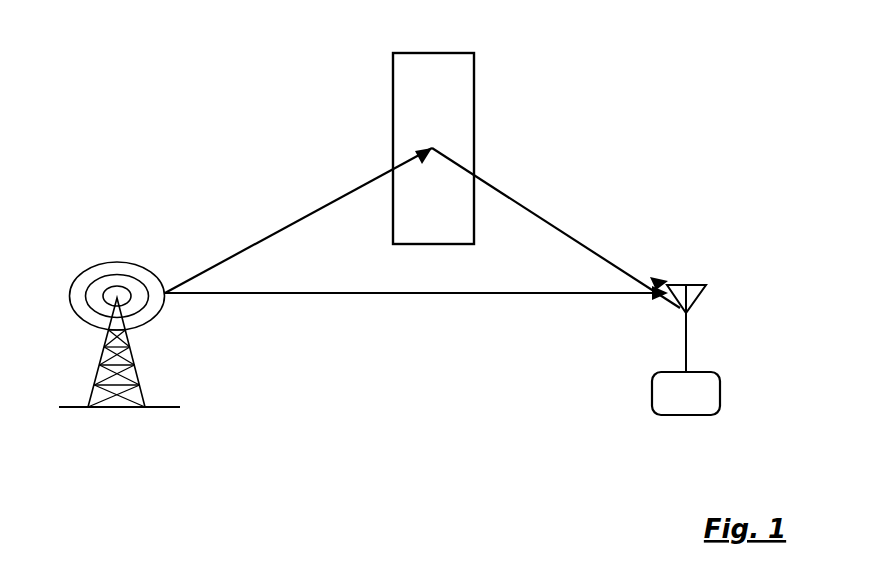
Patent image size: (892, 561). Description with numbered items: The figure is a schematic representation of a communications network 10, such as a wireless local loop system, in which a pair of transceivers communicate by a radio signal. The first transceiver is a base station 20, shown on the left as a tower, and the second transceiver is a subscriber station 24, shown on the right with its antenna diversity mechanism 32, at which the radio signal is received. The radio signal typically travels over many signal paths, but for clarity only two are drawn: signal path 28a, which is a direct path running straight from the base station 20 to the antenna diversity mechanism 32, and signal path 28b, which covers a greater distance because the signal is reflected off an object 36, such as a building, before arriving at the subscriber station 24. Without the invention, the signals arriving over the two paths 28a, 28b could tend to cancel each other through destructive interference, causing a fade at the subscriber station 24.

The communications network 10 is at (288, 100).
The base station 20 is at (119, 355).
The subscriber station 24 is at (686, 393).
The signal path 28a is at (416, 302).
The signal path 28b is at (422, 228).
The antenna diversity mechanism 32 is at (700, 327).
The object 36 is at (433, 148).